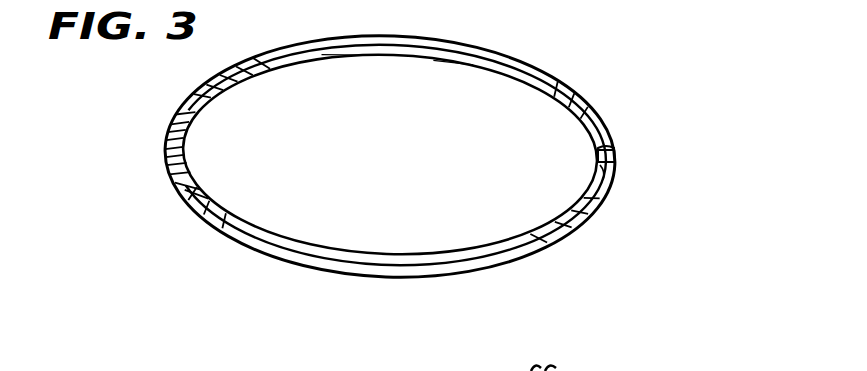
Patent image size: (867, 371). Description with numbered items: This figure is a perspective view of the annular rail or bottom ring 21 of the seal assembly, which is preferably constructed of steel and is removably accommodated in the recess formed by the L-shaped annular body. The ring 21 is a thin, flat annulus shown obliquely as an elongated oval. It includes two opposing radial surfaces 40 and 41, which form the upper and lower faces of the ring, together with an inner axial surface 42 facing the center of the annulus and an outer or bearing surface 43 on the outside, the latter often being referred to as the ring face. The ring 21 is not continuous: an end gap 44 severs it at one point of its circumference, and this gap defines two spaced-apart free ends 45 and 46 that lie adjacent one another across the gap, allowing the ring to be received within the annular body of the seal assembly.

The annular rail or bottom ring 21 is at (526, 65).
The radial surface 40 is at (220, 80).
The radial surface 41 is at (447, 60).
The inner axial surface 42 is at (343, 55).
The outer or bearing surface 43 is at (165, 162).
The end gap 44 is at (620, 163).
The free end 45 is at (598, 170).
The free end 46 is at (613, 152).